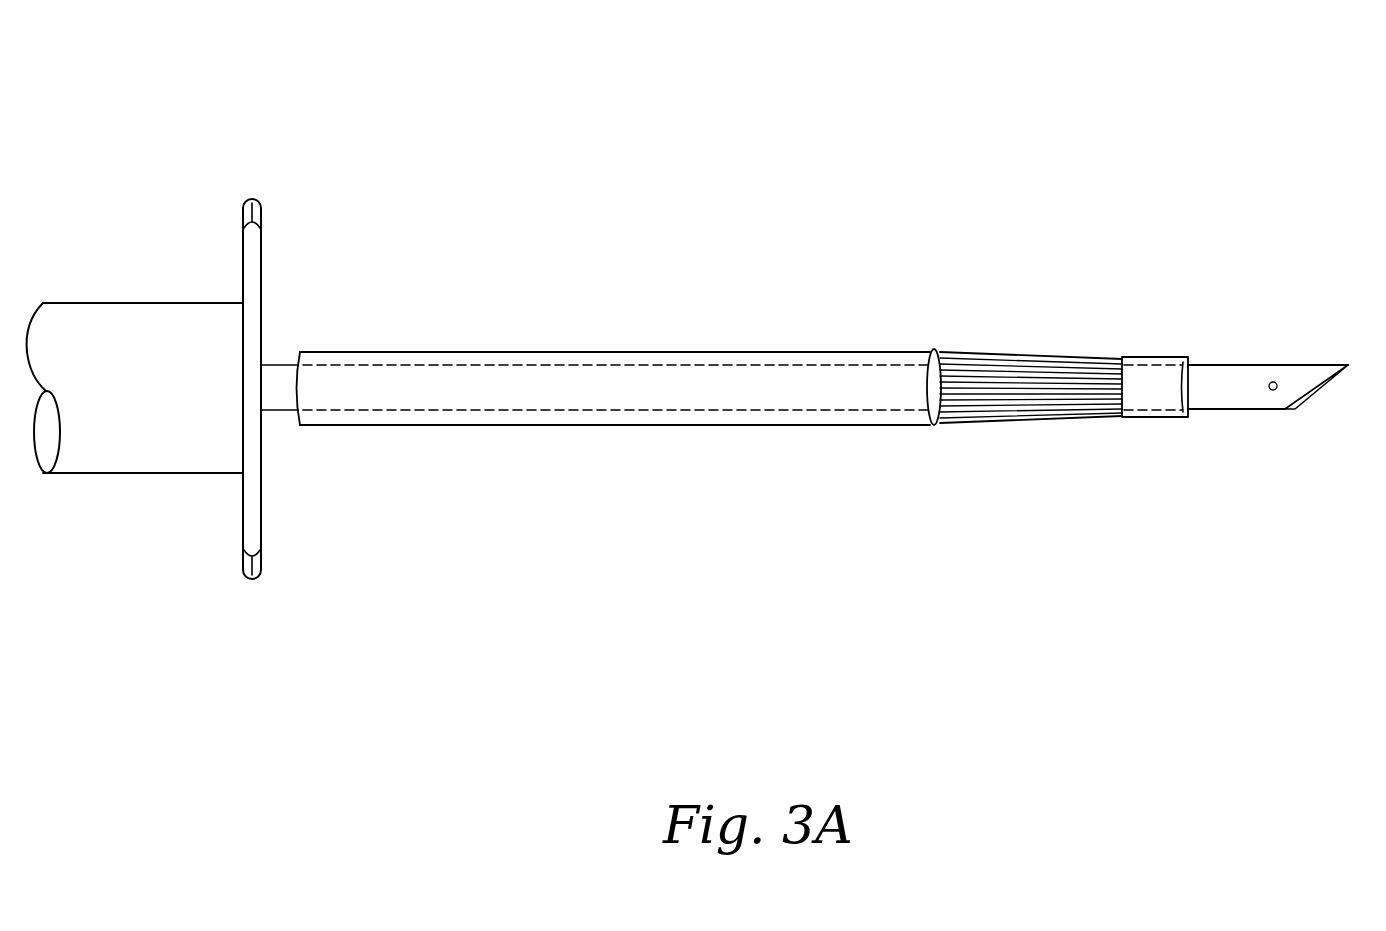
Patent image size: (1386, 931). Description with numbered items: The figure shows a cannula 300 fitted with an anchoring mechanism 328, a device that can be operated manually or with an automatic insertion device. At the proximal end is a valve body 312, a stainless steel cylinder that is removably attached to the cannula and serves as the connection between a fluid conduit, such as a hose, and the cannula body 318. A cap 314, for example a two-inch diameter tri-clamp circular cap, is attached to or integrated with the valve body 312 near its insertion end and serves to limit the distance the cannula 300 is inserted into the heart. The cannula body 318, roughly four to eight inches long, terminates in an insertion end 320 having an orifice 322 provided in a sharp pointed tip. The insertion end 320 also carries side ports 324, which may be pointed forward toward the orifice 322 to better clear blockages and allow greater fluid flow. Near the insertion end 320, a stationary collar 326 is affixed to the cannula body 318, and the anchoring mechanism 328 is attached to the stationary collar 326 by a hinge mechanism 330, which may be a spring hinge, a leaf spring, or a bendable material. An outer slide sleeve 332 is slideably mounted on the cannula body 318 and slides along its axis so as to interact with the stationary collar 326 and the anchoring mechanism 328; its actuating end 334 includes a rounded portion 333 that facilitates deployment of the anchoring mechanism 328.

The cannula 300 is at (332, 105).
The valve body 312 is at (170, 398).
The cap 314 is at (242, 518).
The cannula body 318 is at (595, 393).
The insertion end 320 is at (1286, 367).
The orifice 322 is at (1319, 388).
The ports 324 is at (1270, 391).
The stationary collar 326 is at (1157, 357).
The anchoring mechanism 328 is at (1034, 353).
The hinge mechanism 330 is at (1125, 420).
The outer slide sleeve 332 is at (618, 429).
The rounded portion 333 is at (936, 350).
The actuating end 334 is at (936, 428).